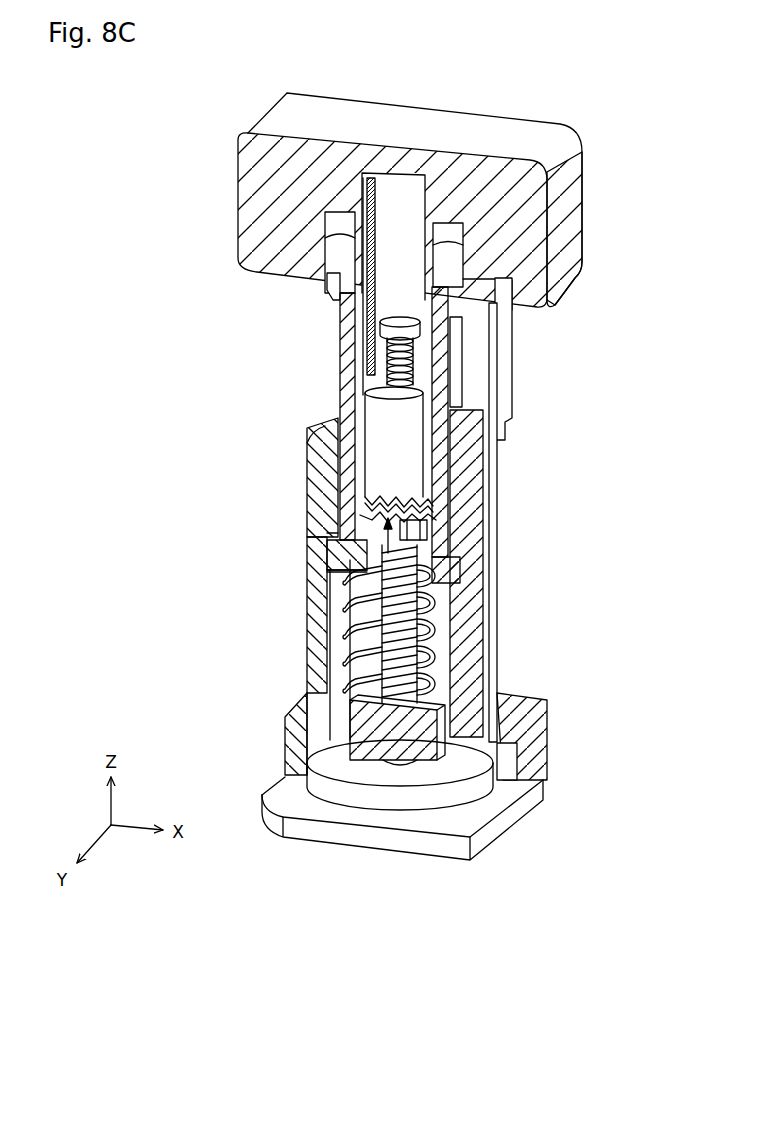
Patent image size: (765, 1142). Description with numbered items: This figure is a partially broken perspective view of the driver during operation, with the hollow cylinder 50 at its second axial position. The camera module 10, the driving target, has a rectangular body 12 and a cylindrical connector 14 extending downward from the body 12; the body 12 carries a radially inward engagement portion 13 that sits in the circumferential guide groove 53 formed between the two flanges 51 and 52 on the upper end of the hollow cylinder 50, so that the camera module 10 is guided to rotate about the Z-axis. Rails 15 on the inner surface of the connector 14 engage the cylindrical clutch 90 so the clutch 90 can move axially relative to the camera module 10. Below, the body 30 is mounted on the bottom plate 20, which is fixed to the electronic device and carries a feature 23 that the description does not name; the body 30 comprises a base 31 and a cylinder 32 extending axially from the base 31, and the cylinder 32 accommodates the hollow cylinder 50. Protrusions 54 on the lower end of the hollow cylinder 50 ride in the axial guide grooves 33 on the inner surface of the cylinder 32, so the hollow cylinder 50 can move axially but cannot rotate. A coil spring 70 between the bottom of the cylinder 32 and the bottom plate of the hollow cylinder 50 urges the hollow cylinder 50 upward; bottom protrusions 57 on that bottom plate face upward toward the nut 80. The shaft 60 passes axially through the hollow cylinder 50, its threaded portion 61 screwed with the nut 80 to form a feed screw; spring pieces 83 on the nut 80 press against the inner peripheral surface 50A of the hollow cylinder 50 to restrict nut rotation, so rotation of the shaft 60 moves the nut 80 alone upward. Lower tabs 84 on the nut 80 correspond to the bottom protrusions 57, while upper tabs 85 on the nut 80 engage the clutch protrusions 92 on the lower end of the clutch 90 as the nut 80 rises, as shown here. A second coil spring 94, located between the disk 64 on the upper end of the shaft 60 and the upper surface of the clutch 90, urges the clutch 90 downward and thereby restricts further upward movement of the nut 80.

The camera module 10 is at (396, 226).
The body 12 is at (566, 210).
The engagement portion 13 is at (455, 293).
The connector 14 is at (340, 308).
The rails 15 is at (380, 175).
The bottom plate 20 is at (377, 840).
The disc boss 23 is at (432, 805).
The body 30 is at (385, 595).
The base 31 is at (533, 690).
The cylinder 32 is at (303, 472).
The guide grooves 33 is at (327, 653).
The hollow cylinder 50 is at (510, 418).
The inner peripheral surface 50A is at (307, 443).
The flange 51 is at (463, 288).
The flange 52 is at (462, 335).
The guide groove 53 is at (250, 273).
The protrusions 54 is at (327, 547).
The bottom protrusions 57 is at (323, 577).
The shaft 60 is at (323, 637).
The threaded portion 61 is at (440, 622).
The disk 64 is at (400, 316).
The coil spring 70 is at (290, 728).
The nut 80 is at (327, 533).
The spring pieces 83 is at (428, 536).
The lower tabs 84 is at (327, 597).
The upper tabs 85 is at (422, 516).
The clutch 90 is at (412, 467).
The clutch protrusions 92 is at (420, 510).
The coil spring 94 is at (437, 355).